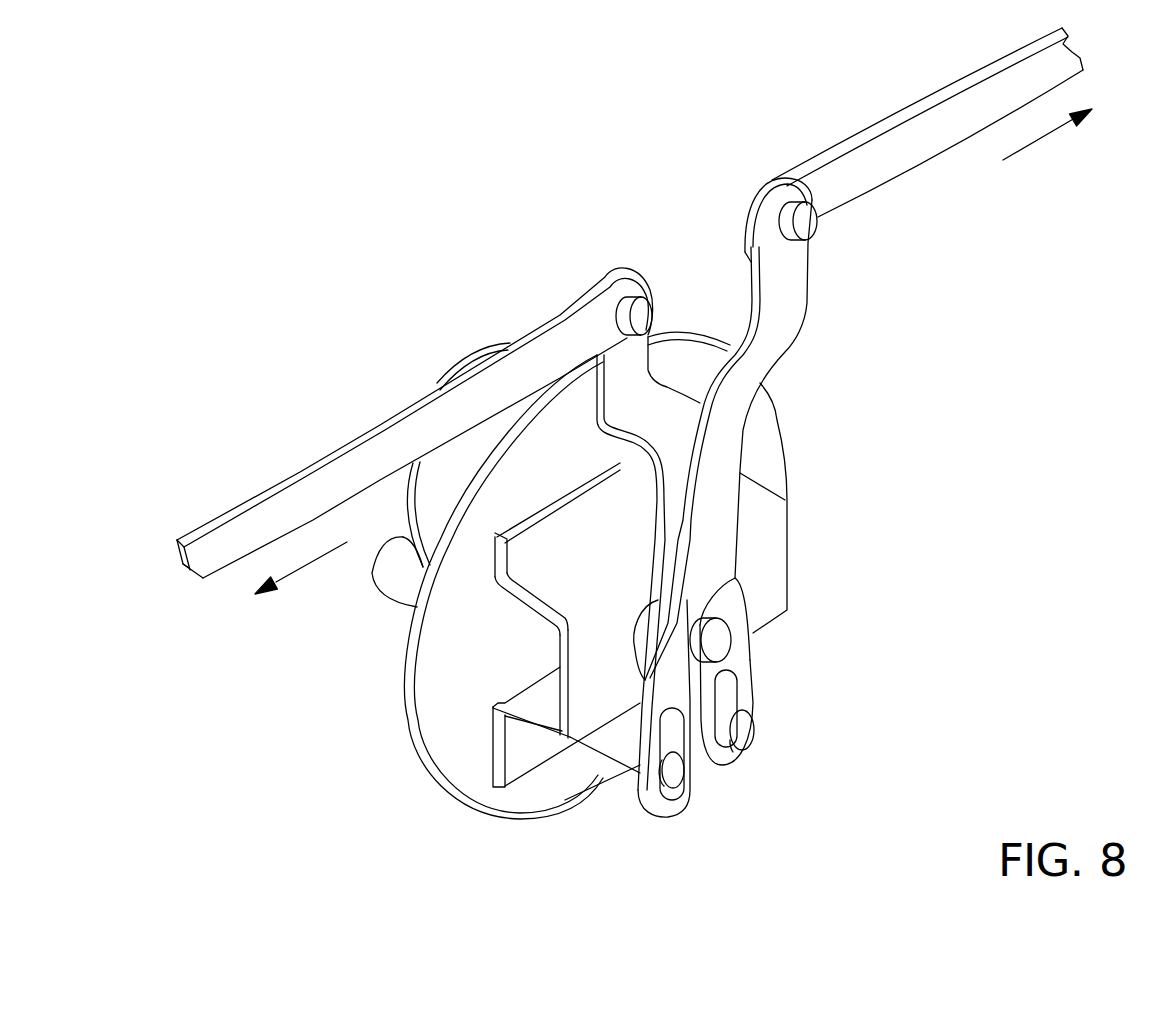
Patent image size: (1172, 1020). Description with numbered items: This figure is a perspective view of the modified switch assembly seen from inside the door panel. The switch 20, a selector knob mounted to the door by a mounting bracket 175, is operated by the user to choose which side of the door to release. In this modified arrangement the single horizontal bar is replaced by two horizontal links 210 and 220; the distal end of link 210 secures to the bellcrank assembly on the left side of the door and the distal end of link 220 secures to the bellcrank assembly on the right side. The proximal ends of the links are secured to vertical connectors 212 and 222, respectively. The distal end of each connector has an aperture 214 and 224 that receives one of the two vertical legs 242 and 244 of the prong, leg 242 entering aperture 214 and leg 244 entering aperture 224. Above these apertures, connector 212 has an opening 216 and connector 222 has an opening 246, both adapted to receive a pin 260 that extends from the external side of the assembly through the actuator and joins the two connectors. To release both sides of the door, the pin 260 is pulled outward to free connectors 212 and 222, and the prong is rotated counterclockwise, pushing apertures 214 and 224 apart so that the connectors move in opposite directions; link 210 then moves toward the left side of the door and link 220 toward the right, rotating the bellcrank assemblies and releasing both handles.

The switch 20 is at (448, 750).
The mounting bracket 175 is at (583, 640).
The horizontal link 210 is at (970, 110).
The vertical connector 212 is at (667, 417).
The aperture 214 is at (810, 661).
The opening 216 is at (810, 608).
The horizontal link 220 is at (305, 497).
The vertical connector 222 is at (720, 513).
The aperture 224 is at (647, 817).
The vertical leg 242 is at (752, 729).
The vertical leg 244 is at (687, 773).
The opening 246 is at (735, 580).
The pin 260 is at (393, 580).